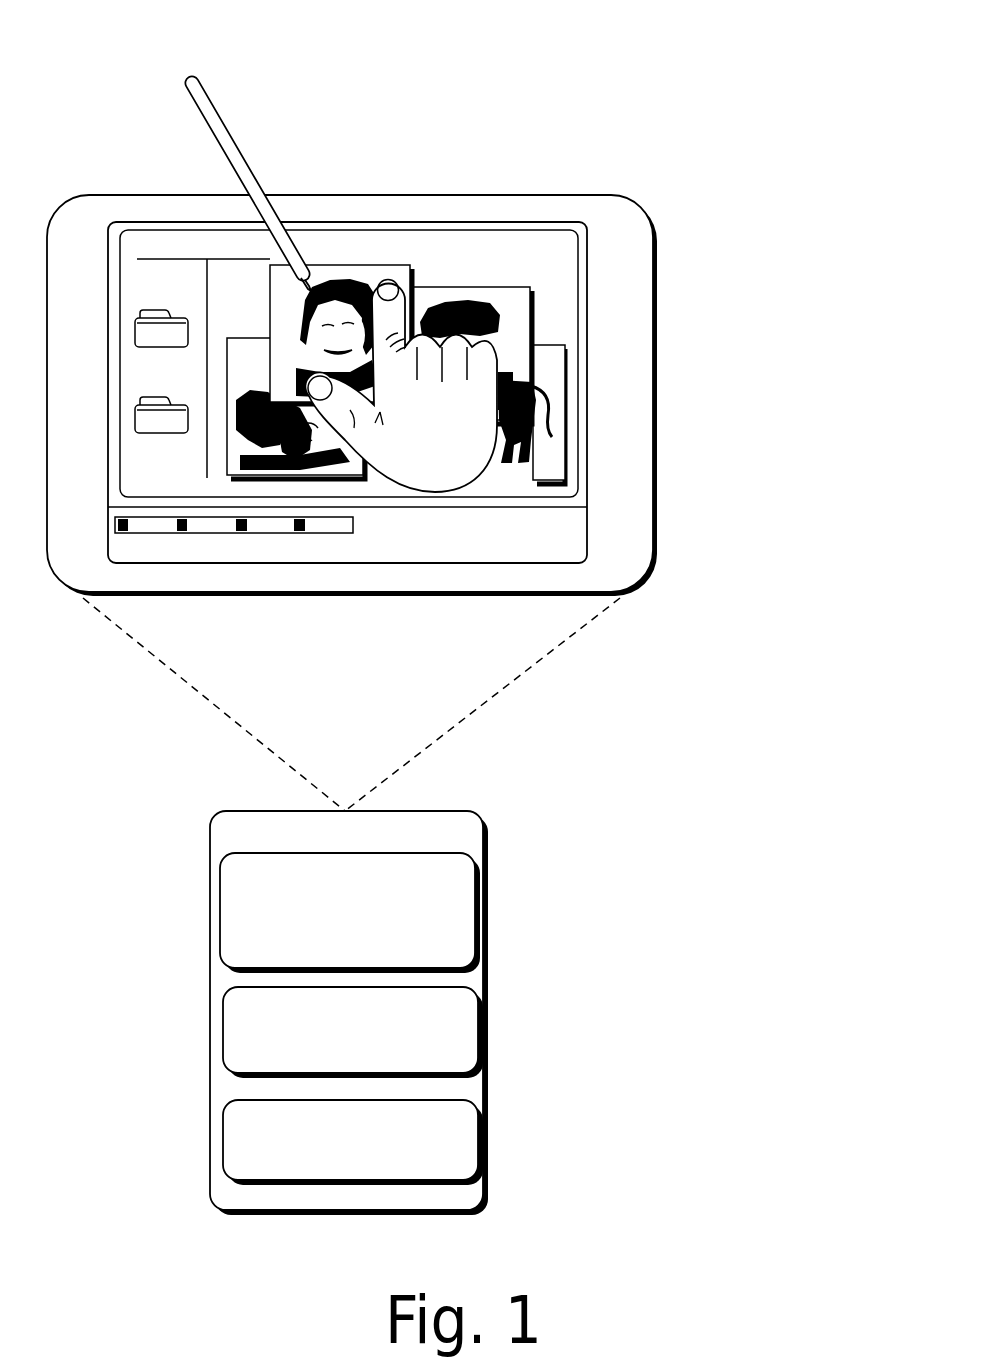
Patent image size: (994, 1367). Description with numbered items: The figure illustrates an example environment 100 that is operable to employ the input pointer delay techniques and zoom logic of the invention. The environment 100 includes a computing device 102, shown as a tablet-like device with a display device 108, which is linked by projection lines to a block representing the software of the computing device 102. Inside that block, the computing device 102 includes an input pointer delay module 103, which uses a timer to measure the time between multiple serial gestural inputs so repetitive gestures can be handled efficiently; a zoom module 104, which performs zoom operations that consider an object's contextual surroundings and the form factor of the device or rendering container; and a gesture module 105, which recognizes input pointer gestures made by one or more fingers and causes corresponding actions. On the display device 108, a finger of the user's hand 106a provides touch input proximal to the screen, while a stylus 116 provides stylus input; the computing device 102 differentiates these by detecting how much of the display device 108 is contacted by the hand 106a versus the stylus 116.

The environment 100 is at (750, 71).
The computing device 102 is at (463, 843).
The input pointer delay module 103 is at (370, 940).
The zoom module 104 is at (371, 1046).
The gesture module 105 is at (371, 1161).
The user's hand 106a is at (462, 473).
The display device 108 is at (352, 322).
The stylus 116 is at (197, 78).